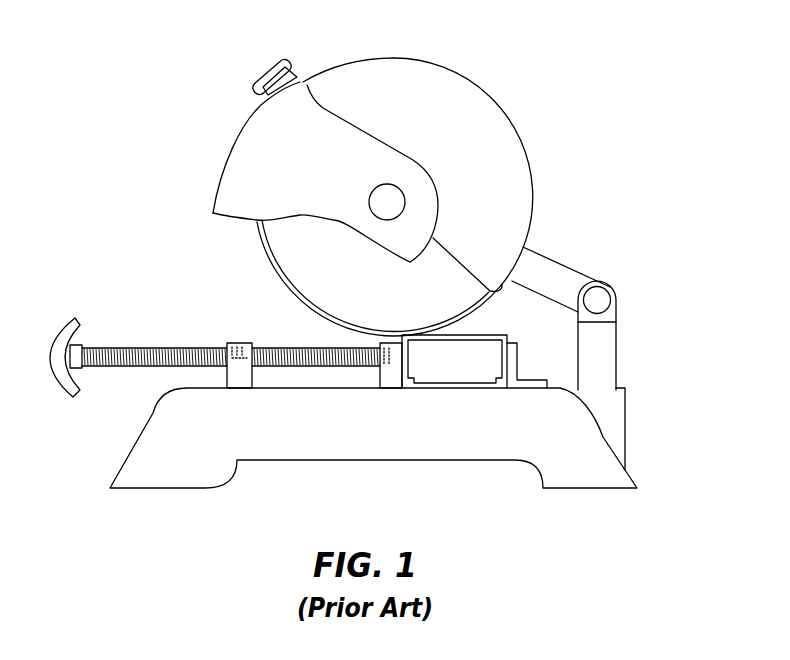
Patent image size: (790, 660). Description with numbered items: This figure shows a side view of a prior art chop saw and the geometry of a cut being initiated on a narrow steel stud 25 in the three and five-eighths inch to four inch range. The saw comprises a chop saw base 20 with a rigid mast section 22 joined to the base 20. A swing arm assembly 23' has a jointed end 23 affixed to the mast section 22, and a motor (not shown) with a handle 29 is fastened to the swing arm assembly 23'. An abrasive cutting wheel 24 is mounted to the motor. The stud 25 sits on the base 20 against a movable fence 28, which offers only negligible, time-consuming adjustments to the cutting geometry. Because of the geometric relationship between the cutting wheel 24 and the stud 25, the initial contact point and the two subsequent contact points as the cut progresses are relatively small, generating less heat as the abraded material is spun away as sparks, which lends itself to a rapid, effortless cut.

The chop saw base 20 is at (582, 437).
The rigid mast section 22 is at (607, 371).
The jointed end 23 is at (637, 263).
The swing arm assembly 23' is at (582, 252).
The abrasive cutting wheel 24 is at (283, 252).
The narrow steel stud 25 is at (493, 330).
The movable fence 28 is at (520, 366).
The handle 29 is at (252, 74).